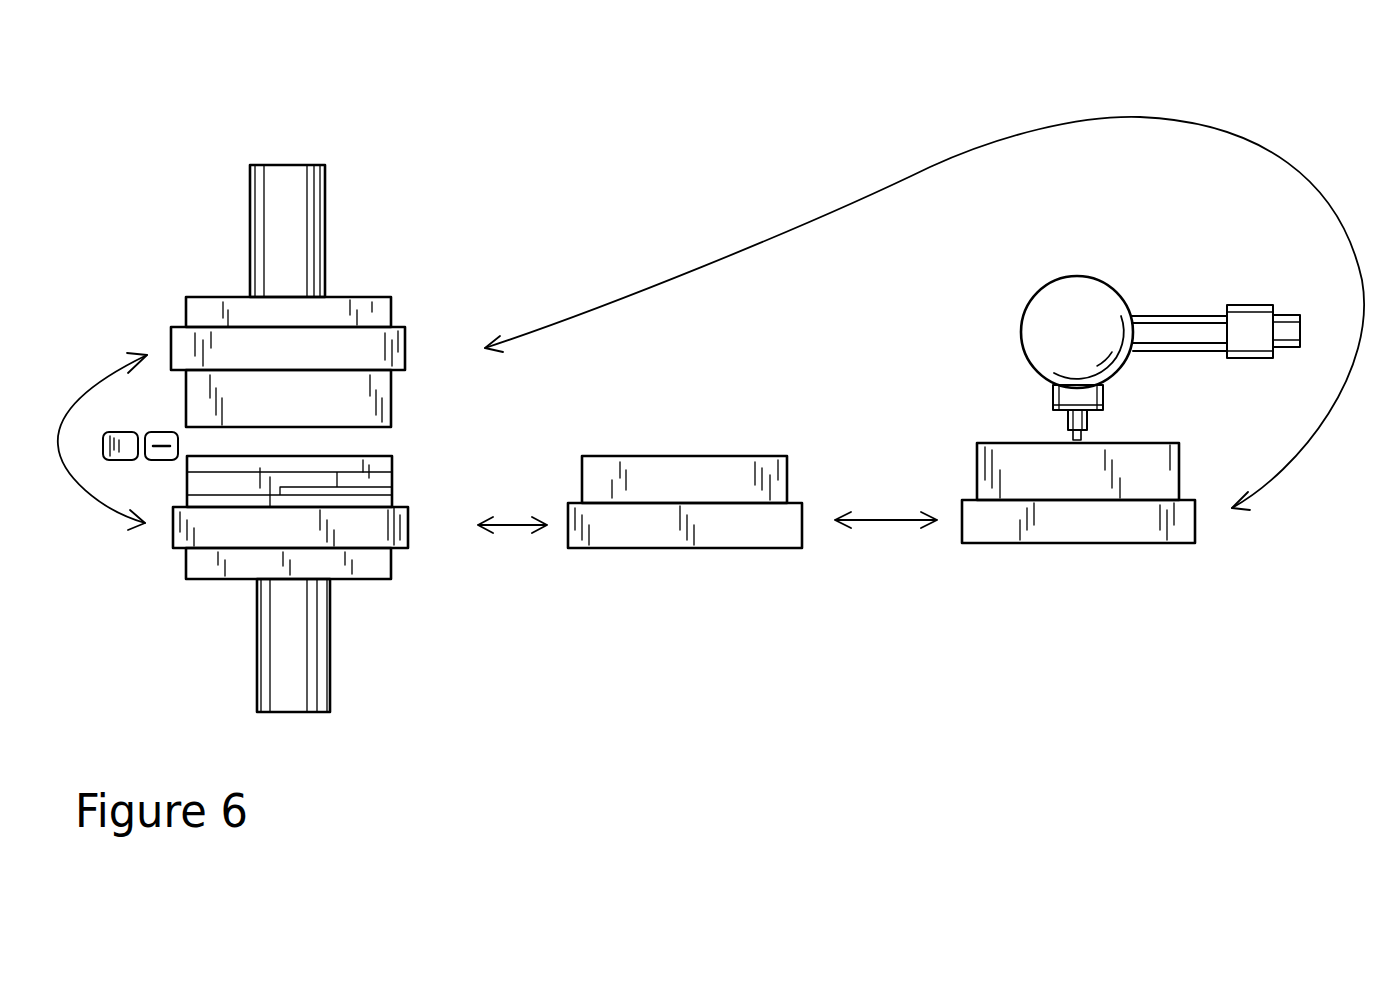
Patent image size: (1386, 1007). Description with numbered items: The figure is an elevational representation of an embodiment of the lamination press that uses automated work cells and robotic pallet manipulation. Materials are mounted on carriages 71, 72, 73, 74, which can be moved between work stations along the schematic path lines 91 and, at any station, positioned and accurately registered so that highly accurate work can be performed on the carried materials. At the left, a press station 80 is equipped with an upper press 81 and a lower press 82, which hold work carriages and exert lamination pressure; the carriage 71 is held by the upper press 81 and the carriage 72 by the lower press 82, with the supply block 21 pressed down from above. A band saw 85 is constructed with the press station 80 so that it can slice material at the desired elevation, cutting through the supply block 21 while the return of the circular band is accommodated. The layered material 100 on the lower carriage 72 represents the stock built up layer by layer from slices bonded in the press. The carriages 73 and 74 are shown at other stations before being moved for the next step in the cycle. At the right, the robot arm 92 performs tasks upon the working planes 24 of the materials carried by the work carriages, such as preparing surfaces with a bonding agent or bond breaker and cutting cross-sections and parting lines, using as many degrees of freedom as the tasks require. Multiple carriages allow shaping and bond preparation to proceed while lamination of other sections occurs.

The press station 80 is at (450, 185).
The upper press 81 is at (373, 297).
The carriage 71 is at (377, 358).
The supply block 21 is at (393, 398).
The working planes 24 is at (380, 453).
The laminated sheets 100 is at (205, 478).
The carriage 72 is at (383, 528).
The lower press 82 is at (377, 572).
The band saw 85 is at (166, 433).
The carriage 73 is at (630, 539).
The carriage 74 is at (1017, 536).
The robot arm 92 is at (1162, 315).
The schematic path lines 91 is at (108, 520).